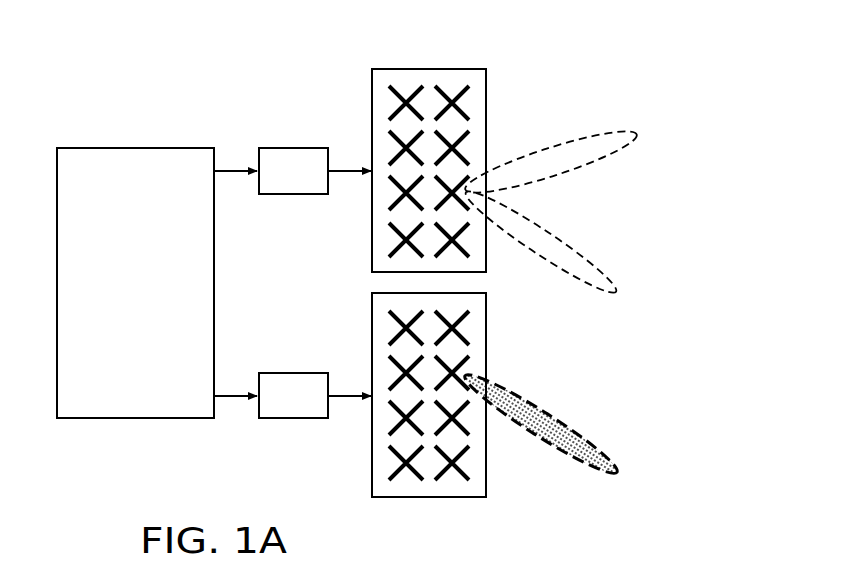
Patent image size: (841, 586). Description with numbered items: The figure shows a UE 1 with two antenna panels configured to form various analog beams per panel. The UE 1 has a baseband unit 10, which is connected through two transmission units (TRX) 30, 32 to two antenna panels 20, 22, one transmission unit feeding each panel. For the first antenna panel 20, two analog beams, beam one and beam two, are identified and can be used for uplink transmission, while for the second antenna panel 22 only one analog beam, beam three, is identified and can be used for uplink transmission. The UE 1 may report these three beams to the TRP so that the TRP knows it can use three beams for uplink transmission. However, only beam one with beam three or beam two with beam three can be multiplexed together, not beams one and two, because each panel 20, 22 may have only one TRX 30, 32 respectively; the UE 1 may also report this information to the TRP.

The UE 1 is at (146, 68).
The baseband unit 10 is at (150, 315).
The antenna panel 20 is at (490, 96).
The antenna panel 22 is at (490, 448).
The transmission unit (TRX) 30 is at (293, 147).
The transmission unit (TRX) 32 is at (291, 419).